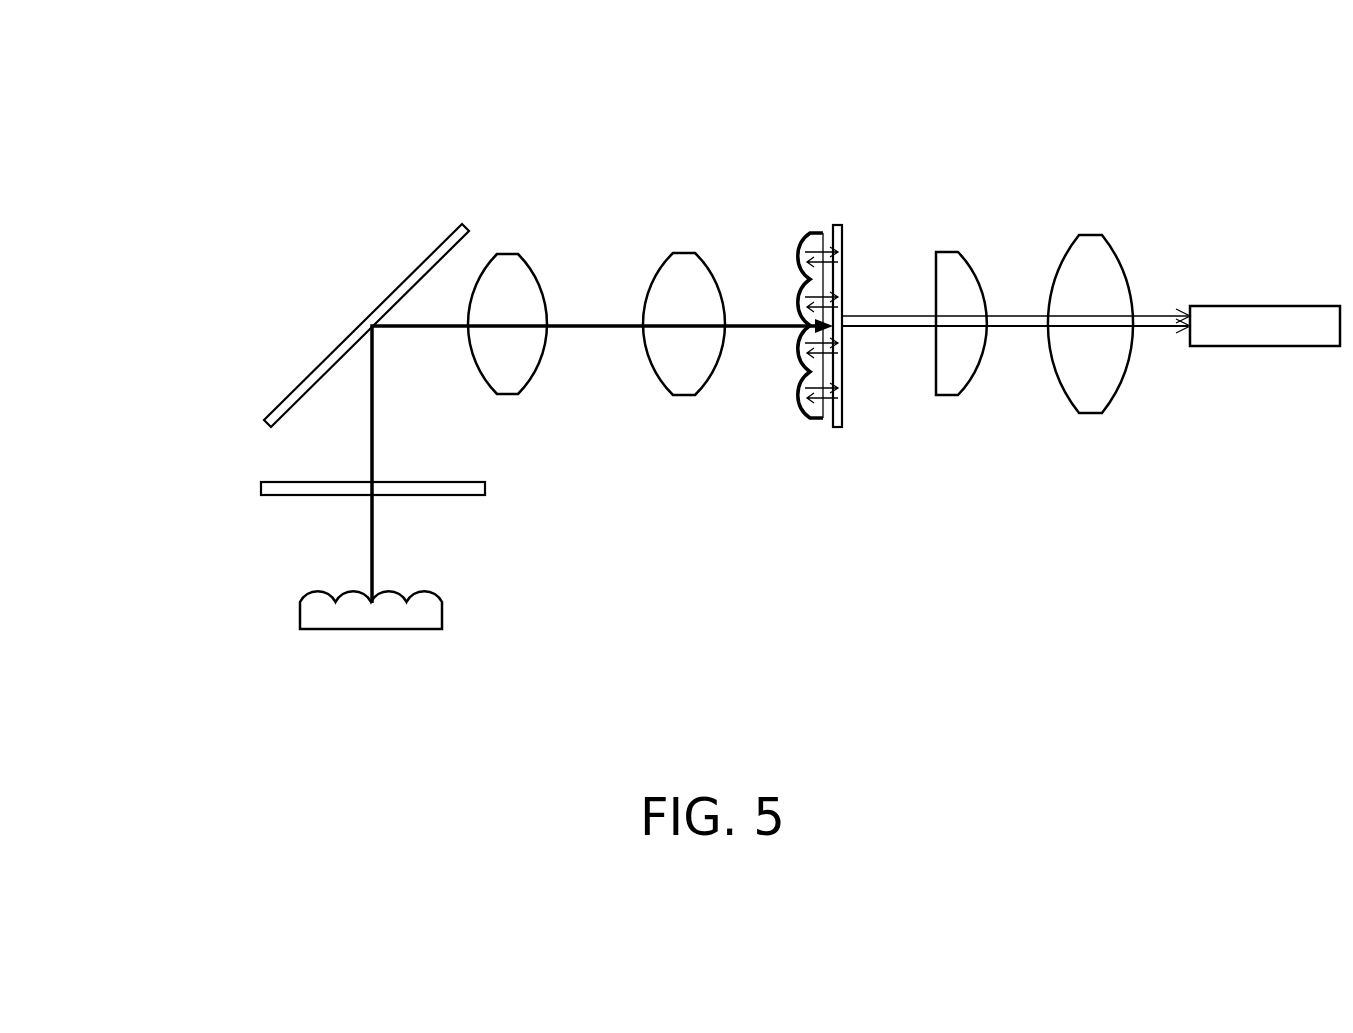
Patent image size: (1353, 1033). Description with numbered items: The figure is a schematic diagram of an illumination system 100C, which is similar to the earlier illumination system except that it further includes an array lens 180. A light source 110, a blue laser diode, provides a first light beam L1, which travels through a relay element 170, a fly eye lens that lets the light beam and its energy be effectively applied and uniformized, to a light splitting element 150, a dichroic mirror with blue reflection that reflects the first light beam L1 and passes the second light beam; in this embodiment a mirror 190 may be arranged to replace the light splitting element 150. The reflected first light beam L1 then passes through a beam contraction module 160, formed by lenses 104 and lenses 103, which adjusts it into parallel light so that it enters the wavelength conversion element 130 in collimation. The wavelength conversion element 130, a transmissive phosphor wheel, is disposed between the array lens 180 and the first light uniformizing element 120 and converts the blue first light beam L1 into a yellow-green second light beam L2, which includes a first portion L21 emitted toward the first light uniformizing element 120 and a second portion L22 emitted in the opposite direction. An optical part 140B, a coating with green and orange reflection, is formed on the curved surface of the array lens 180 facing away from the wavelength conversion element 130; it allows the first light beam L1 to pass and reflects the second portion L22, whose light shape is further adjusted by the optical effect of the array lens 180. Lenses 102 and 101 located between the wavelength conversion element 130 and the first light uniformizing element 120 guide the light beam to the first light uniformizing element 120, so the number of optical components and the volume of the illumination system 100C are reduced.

The illumination system 100C is at (700, 393).
The lens 101 is at (1089, 235).
The lens 102 is at (950, 252).
The lens 103 is at (682, 253).
The lens 104 is at (499, 254).
The light source 110 is at (442, 615).
The first light uniformizing element 120 is at (1268, 306).
The wavelength conversion element 130 is at (838, 225).
The optical part 140B is at (797, 250).
The light splitting element 150 is at (371, 281).
The mirror 190 is at (460, 228).
The beam contraction module 160 is at (596, 254).
The relay element 170 is at (485, 488).
The array lens 180 is at (815, 243).
The first light beam L1 is at (604, 329).
The second light beam L2 is at (625, 283).
The first portion L21 is at (1012, 330).
The second portion L22 is at (888, 315).